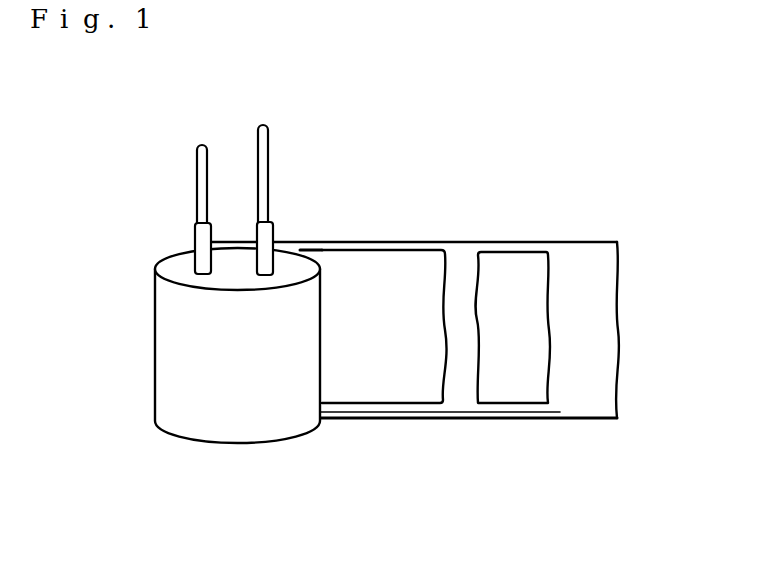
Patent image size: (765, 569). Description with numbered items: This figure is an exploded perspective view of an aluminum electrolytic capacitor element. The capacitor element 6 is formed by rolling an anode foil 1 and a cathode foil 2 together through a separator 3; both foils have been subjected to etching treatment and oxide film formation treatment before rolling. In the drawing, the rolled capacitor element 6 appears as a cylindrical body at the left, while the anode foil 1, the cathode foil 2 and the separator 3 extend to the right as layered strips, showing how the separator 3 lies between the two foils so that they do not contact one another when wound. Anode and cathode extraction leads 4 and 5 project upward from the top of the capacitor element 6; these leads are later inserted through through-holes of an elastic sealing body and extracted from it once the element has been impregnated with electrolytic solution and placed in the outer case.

The anode foil 1 is at (520, 268).
The cathode foil 2 is at (390, 267).
The separator 3 is at (468, 405).
The anode extraction lead 4 is at (269, 156).
The cathode extraction lead 5 is at (197, 183).
The capacitor element 6 is at (203, 407).